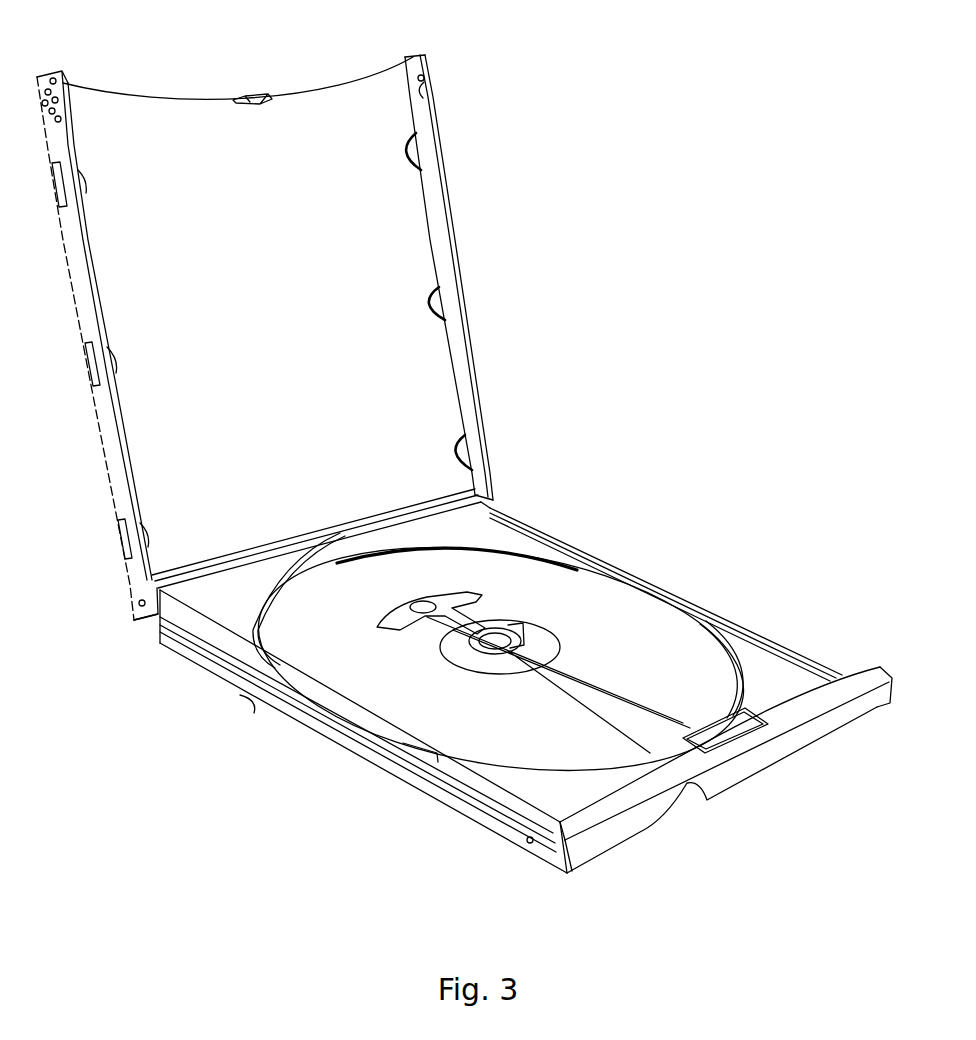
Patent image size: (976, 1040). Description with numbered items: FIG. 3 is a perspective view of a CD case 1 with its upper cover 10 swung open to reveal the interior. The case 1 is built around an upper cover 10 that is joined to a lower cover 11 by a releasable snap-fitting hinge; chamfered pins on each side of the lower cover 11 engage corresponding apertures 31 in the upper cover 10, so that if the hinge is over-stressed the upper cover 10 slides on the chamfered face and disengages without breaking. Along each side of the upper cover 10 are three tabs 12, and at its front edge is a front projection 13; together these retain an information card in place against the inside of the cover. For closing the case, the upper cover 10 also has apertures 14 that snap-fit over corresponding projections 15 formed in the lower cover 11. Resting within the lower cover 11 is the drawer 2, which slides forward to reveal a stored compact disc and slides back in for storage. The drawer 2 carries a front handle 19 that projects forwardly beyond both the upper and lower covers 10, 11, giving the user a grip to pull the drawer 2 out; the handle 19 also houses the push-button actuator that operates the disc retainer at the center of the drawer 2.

The CD case 1 is at (633, 225).
The drawer 2 is at (512, 540).
The upper cover 10 is at (480, 400).
The lower cover 11 is at (260, 700).
The tabs 12 is at (448, 298).
The front projection 13 is at (260, 95).
The apertures 14 is at (428, 92).
The projections 15 is at (527, 840).
The front handle 19 is at (762, 783).
The apertures 31 is at (137, 605).